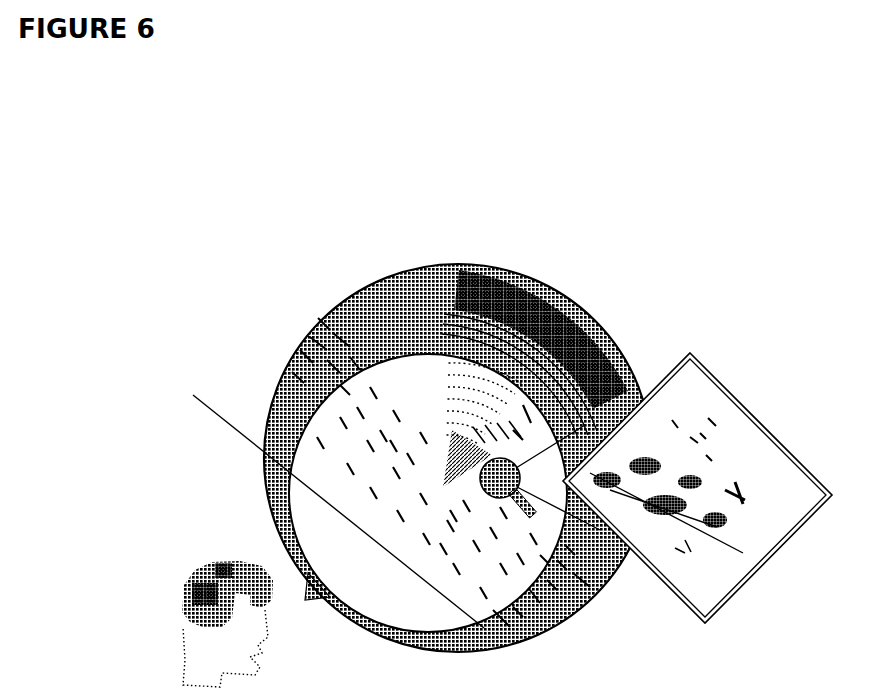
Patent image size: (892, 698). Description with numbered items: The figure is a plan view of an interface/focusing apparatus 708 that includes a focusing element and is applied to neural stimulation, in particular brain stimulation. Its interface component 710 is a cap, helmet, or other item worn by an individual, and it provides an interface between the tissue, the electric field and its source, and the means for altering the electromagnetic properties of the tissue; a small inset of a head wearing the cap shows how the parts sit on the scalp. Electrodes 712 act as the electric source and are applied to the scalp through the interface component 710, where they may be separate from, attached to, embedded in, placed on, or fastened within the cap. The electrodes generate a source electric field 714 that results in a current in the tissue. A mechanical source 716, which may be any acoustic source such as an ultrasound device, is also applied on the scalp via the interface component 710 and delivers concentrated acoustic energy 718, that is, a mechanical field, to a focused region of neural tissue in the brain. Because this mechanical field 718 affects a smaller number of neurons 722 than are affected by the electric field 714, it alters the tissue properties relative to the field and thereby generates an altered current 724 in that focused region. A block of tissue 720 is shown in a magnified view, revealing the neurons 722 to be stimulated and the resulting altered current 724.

The apparatus 708 is at (176, 325).
The interface component 710 is at (454, 458).
The electrodes 712 is at (270, 386).
The source electric field 714 is at (371, 387).
The mechanical source 716 is at (583, 312).
The concentrated acoustic energy 718 is at (412, 458).
The block of tissue 720 is at (697, 488).
The neurons 722 is at (667, 528).
The altered current 724 is at (693, 426).